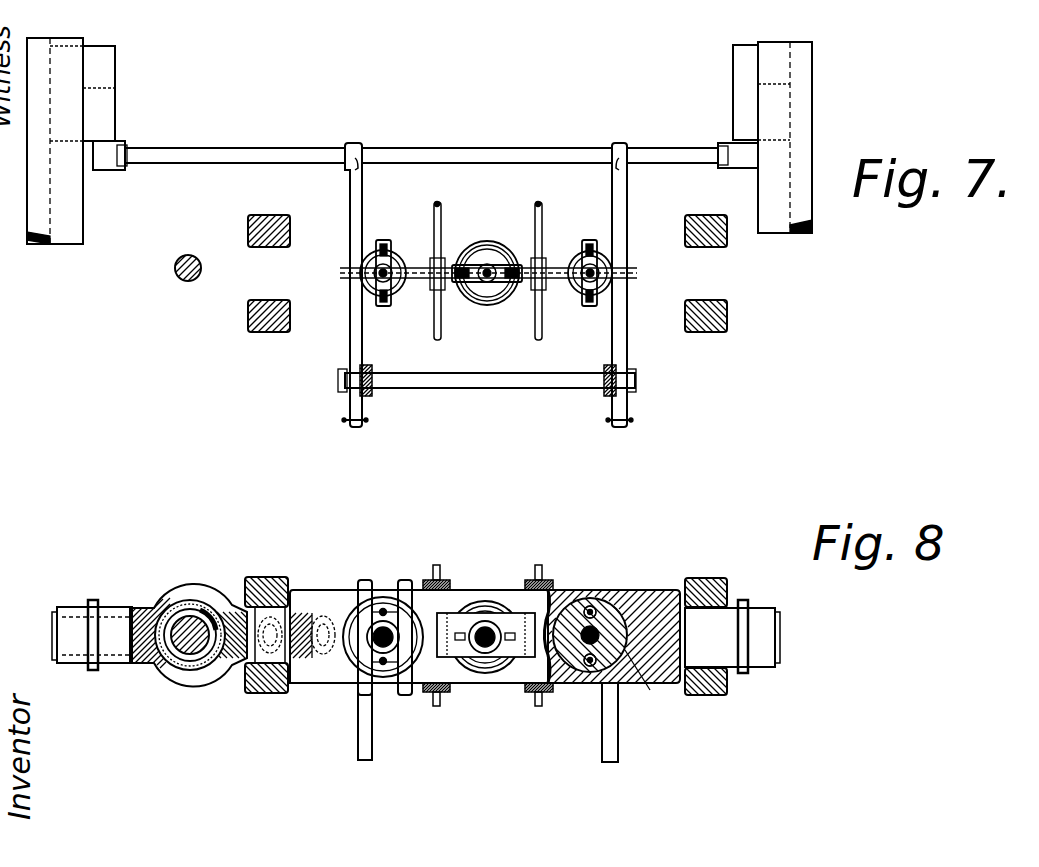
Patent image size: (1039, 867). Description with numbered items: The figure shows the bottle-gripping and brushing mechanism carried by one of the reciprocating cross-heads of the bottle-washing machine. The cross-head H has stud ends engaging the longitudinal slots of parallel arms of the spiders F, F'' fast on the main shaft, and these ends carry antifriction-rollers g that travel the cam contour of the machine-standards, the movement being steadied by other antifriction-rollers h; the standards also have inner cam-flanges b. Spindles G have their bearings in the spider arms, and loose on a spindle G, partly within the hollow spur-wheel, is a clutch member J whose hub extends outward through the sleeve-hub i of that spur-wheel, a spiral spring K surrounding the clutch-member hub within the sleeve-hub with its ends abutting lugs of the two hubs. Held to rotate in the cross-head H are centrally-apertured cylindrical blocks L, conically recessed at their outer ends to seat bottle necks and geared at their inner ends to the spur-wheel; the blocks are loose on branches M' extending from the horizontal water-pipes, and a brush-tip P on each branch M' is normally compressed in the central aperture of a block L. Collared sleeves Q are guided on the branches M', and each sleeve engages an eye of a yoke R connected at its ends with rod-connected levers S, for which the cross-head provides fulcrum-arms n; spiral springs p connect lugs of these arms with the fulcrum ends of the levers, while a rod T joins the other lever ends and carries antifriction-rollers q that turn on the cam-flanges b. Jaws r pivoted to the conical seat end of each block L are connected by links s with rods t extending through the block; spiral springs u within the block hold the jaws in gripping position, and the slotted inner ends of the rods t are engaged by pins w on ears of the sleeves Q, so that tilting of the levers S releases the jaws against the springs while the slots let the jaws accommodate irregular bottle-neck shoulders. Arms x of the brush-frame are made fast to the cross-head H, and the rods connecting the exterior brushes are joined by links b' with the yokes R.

In FIG. 7, the cam-flange b is at (419, 141).
In FIG. 7, the antifriction-roller q is at (112, 152).
In FIG. 7, the rod T is at (460, 148).
In FIG. 7, the lever S is at (350, 338).
In FIG. 7, the fulcrum-arm n is at (370, 396).
In FIG. 8, the fulcrum-arm n is at (372, 752).
In FIG. 7, the spiral spring p is at (360, 424).
In FIG. 7, the spindle G is at (188, 254).
In FIG. 8, the spindle G is at (200, 618).
In FIG. 7, the spider F is at (269, 273).
In FIG. 8, the spider F is at (266, 618).
In FIG. 7, the spider F'' is at (718, 273).
In FIG. 8, the spider F'' is at (710, 619).
In FIG. 7, the link b' is at (500, 268).
In FIG. 8, the link b' is at (491, 641).
In FIG. 7, the collared sleeve Q is at (398, 262).
In FIG. 7, the pipe branch M' is at (486, 285).
In FIG. 7, the rod t is at (384, 240).
In FIG. 8, the rod t is at (383, 608).
In FIG. 7, the yoke R is at (458, 266).
In FIG. 7, the pin w is at (392, 250).
In FIG. 8, the pin w is at (643, 681).
In FIG. 8, the antifriction-roller g is at (70, 610).
In FIG. 8, the spiral spring K is at (160, 665).
In FIG. 8, the extended hub i is at (165, 610).
In FIG. 8, the clutch member J is at (193, 662).
In FIG. 8, the antifriction-roller h is at (270, 635).
In FIG. 8, the cross-head H is at (316, 590).
In FIG. 8, the brush-tip P is at (345, 680).
In FIG. 8, the jaw r is at (520, 625).
In FIG. 8, the link s is at (460, 632).
In FIG. 8, the arm x is at (450, 582).
In FIG. 8, the cylindrical block L is at (605, 600).
In FIG. 8, the spiral spring u is at (588, 606).